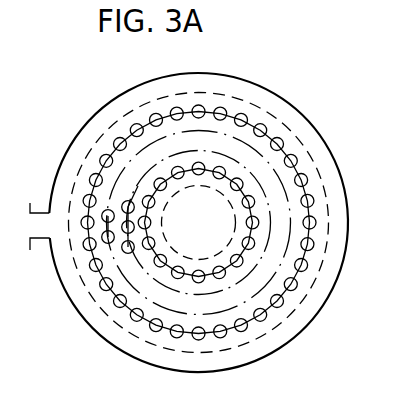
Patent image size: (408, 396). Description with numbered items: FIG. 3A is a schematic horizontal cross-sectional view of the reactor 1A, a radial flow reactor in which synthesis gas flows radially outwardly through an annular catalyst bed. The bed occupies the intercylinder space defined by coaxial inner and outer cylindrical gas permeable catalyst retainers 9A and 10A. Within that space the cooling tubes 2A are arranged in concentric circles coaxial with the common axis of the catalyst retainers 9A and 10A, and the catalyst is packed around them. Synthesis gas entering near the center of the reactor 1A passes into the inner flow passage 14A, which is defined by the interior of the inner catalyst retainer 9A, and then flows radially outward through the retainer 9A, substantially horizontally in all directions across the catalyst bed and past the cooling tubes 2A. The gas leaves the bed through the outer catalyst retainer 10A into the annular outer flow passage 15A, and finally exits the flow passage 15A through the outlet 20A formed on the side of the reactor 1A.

The reactor 1A is at (62, 283).
The cooling tubes 2A is at (123, 308).
The inner catalyst retainer 9A is at (222, 188).
The outer catalyst retainer 10A is at (244, 98).
The inner flow passage 14A is at (220, 212).
The annular outer flow passage 15A is at (321, 276).
The outlet 20A is at (28, 222).